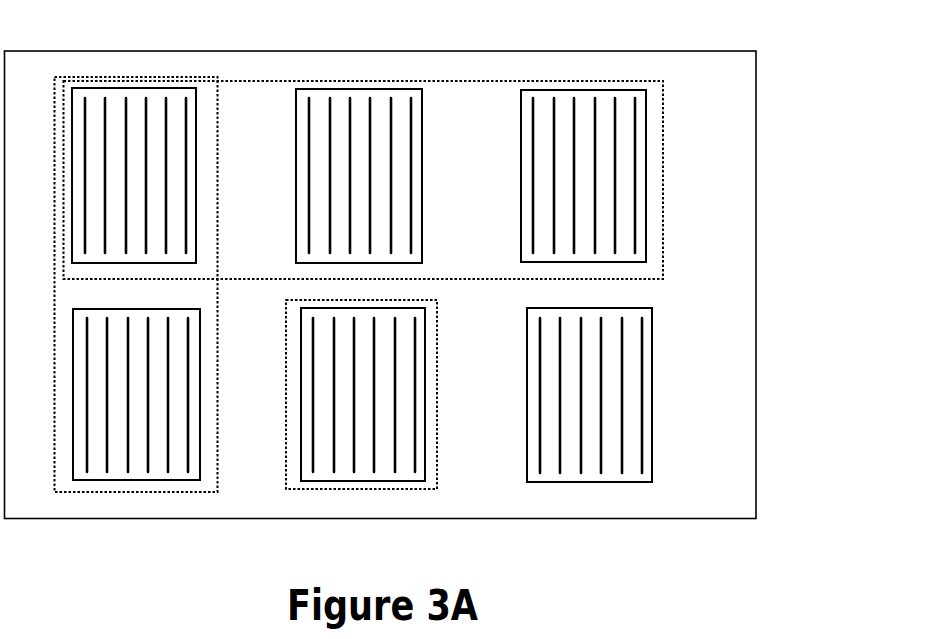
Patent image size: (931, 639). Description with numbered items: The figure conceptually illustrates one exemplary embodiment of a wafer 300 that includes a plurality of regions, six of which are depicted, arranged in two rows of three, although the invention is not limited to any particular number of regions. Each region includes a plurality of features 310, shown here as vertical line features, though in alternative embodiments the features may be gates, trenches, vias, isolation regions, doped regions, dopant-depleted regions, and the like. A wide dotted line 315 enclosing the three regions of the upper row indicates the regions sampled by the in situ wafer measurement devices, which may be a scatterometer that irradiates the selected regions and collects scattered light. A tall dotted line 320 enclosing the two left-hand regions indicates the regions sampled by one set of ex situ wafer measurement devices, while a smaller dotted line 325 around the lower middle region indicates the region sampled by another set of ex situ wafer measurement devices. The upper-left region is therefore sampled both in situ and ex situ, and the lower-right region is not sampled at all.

The wafer 300 is at (756, 275).
The feature 310 is at (636, 135).
The dotted line 315 is at (663, 95).
The dotted line 320 is at (148, 492).
The dotted line 325 is at (440, 435).